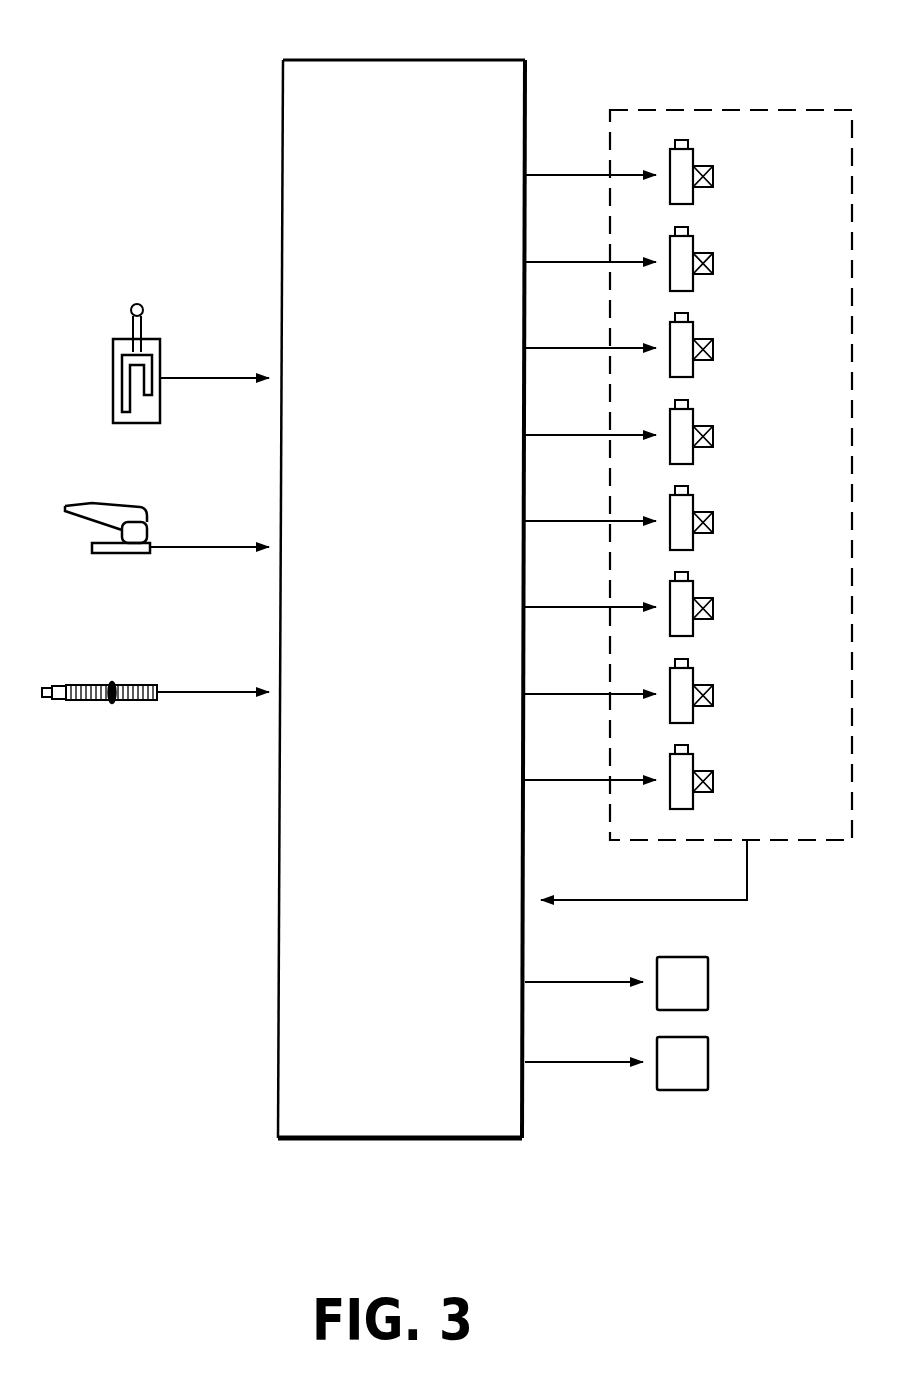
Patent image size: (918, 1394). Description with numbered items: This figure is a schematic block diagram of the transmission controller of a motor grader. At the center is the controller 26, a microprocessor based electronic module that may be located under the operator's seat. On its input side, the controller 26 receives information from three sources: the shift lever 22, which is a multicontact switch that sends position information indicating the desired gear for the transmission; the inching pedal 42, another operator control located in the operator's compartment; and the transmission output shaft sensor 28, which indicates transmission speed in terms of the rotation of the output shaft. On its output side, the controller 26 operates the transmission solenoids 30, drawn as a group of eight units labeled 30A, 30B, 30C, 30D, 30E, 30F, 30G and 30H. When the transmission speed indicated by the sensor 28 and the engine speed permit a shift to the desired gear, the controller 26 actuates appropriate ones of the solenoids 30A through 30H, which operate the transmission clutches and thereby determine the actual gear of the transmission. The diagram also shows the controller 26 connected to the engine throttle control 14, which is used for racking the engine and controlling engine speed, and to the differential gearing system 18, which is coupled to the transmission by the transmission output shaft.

The controller 26 is at (478, 62).
The shift lever 22 is at (130, 306).
The inching pedal 42 is at (120, 508).
The transmission output shaft sensor 28 is at (90, 685).
The transmission solenoids 30 is at (718, 108).
The transmission solenoid 30A is at (688, 162).
The transmission solenoid 30B is at (688, 248).
The transmission solenoid 30C is at (688, 335).
The transmission solenoid 30D is at (688, 421).
The transmission solenoid 30E is at (688, 507).
The transmission solenoid 30F is at (688, 593).
The transmission solenoid 30G is at (688, 680).
The transmission solenoid 30H is at (688, 766).
The engine throttle control 14 is at (700, 975).
The differential gearing system 18 is at (700, 1057).